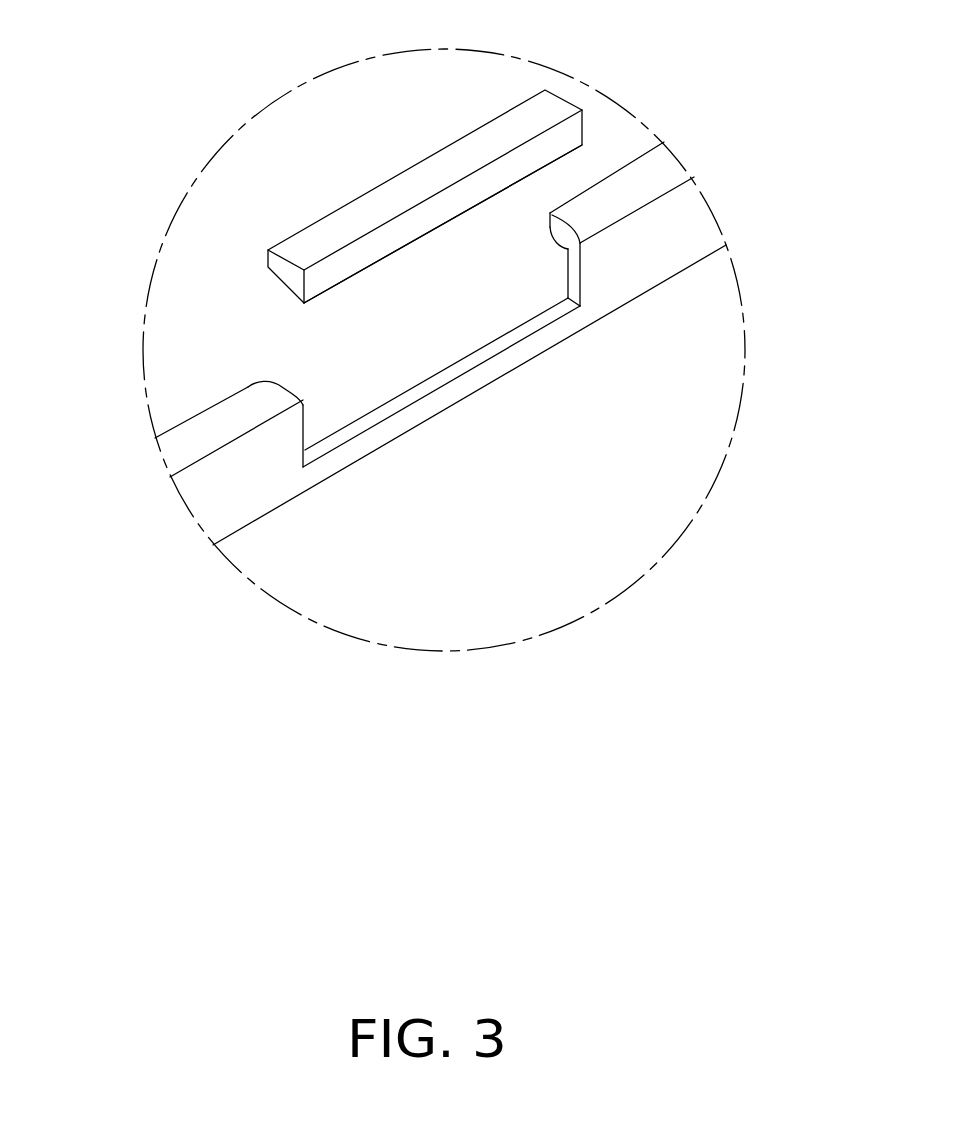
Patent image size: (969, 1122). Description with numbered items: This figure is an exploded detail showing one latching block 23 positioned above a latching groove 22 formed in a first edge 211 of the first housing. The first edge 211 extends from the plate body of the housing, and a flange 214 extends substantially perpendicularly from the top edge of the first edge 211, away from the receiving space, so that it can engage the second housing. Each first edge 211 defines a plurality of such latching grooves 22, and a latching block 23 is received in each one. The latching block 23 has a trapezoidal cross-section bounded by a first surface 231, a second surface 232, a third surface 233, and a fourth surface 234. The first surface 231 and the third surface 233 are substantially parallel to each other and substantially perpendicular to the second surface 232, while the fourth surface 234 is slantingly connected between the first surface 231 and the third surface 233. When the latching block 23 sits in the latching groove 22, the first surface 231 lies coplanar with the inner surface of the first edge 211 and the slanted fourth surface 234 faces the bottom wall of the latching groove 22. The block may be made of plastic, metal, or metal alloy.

The latching block 23 is at (388, 169).
The first surface 231 is at (572, 132).
The second surface 232 is at (552, 110).
The third surface 233 is at (268, 258).
The fourth surface 234 is at (277, 279).
The latching groove 22 is at (528, 300).
The flange 214 is at (662, 177).
The first edge 211 is at (682, 230).